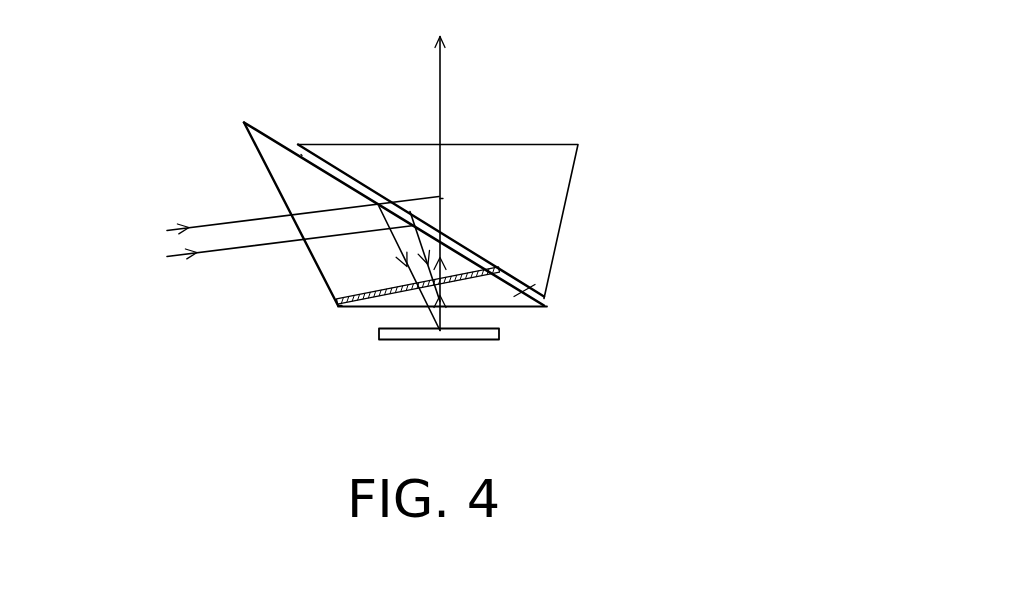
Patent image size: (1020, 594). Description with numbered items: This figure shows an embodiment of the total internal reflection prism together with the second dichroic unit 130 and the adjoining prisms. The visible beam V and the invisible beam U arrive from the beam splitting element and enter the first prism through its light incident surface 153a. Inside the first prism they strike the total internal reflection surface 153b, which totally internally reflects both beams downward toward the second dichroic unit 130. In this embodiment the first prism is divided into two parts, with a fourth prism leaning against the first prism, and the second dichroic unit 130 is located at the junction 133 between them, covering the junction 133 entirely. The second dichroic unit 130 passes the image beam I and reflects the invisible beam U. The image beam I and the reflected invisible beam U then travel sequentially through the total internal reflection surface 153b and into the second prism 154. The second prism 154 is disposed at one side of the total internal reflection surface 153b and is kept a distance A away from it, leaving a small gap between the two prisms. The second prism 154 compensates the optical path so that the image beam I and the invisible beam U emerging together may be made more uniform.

The light incident surface 153a is at (258, 156).
The total internal reflection surface 153b is at (354, 178).
The second prism 154 is at (562, 168).
The second dichroic unit 130 is at (352, 296).
The junction 133 is at (336, 302).
The image beam I is at (440, 312).
The visible beam V is at (212, 226).
The invisible beam U is at (212, 256).
The distance A is at (298, 152).